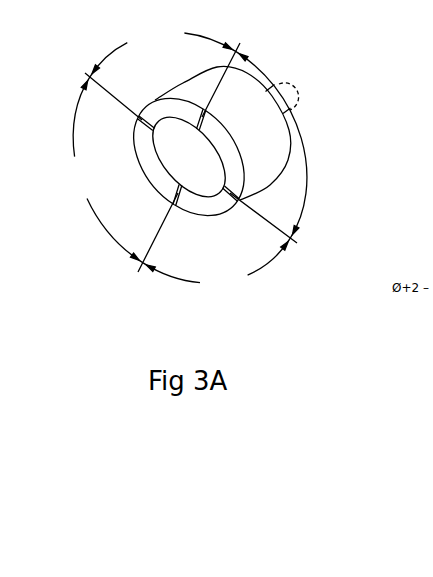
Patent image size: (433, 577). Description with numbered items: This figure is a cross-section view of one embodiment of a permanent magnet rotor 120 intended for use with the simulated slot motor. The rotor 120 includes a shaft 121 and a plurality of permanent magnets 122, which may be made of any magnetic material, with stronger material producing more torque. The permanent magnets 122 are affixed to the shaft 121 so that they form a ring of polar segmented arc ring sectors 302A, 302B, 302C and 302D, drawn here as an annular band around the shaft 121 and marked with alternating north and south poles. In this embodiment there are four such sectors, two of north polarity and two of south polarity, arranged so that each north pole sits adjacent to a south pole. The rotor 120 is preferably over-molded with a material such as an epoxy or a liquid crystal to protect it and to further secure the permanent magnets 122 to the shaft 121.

The rotor 120 is at (190, 223).
The shaft 121 is at (171, 172).
The permanent magnets 122 is at (229, 216).
The polar segmented arc ring sector 302A is at (216, 264).
The polar segmented arc ring sector 302B is at (281, 144).
The polar segmented arc ring sector 302C is at (163, 55).
The polar segmented arc ring sector 302D is at (101, 170).